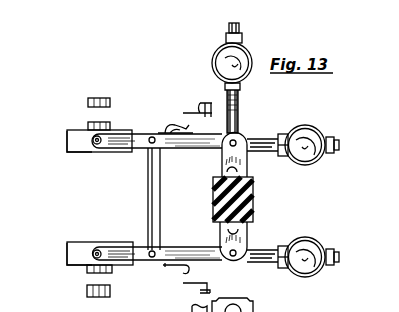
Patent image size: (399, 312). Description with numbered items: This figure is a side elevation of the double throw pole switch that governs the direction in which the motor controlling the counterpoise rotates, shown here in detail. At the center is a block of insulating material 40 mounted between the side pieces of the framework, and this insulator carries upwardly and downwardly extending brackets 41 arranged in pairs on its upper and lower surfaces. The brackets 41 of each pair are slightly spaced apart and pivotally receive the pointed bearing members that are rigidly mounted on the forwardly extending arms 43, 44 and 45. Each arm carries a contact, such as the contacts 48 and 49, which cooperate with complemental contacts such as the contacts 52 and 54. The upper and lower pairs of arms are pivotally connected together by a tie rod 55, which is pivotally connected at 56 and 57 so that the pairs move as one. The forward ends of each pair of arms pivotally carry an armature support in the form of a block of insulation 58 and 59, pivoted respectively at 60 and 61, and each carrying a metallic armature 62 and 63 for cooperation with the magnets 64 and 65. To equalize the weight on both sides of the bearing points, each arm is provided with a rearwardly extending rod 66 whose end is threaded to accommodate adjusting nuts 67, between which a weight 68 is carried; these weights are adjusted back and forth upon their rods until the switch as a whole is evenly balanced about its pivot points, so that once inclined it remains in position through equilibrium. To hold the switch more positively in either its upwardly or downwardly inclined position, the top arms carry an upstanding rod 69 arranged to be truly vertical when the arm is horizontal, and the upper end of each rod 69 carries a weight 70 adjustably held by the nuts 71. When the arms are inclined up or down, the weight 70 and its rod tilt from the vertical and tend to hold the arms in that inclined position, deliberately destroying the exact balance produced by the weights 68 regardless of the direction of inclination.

The block of insulating material 40 is at (253, 210).
The brackets 41 is at (247, 165).
The arm 43 is at (192, 308).
The arm 44 is at (143, 151).
The arm 45 is at (135, 250).
The contact 48 is at (180, 122).
The contact 49 is at (177, 272).
The complemental contact 52 is at (198, 111).
The complemental contact 54 is at (196, 280).
The tie rod 55 is at (155, 179).
The pivotal connection 56 is at (151, 137).
The pivotal connection 57 is at (160, 251).
The armature support 58 is at (77, 153).
The armature support 59 is at (67, 253).
The pivot 60 is at (97, 152).
The pivot 61 is at (97, 250).
The metallic armature 62 is at (88, 123).
The metallic armature 63 is at (87, 272).
The magnet 64 is at (102, 85).
The magnet 65 is at (88, 297).
The rearwardly extending rod 66 is at (262, 139).
The adjusting nuts 67 is at (283, 133).
The weight 68 is at (307, 133).
The upstanding rod 69 is at (237, 113).
The weight 70 is at (238, 62).
The nuts 71 is at (228, 42).